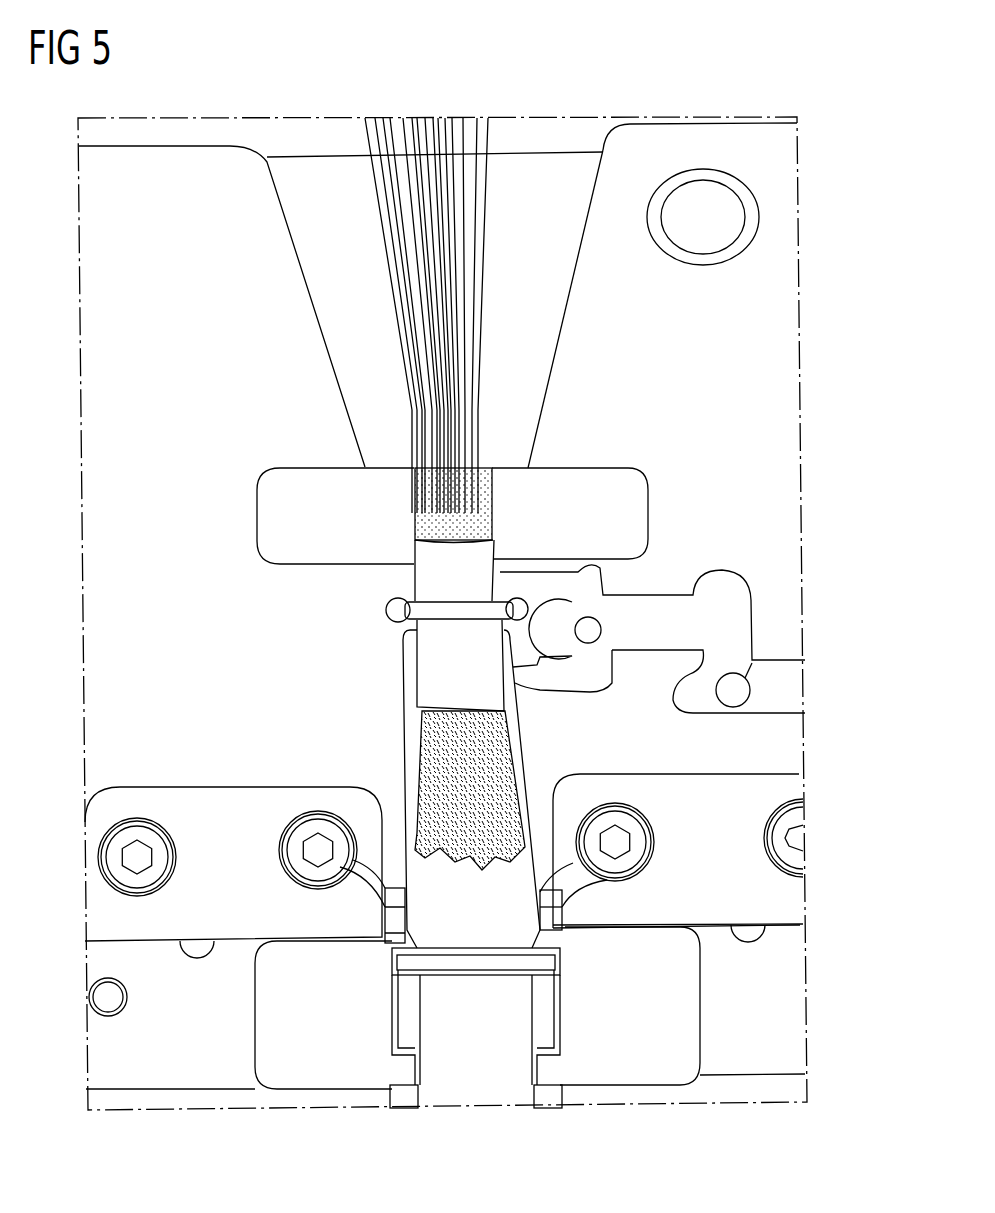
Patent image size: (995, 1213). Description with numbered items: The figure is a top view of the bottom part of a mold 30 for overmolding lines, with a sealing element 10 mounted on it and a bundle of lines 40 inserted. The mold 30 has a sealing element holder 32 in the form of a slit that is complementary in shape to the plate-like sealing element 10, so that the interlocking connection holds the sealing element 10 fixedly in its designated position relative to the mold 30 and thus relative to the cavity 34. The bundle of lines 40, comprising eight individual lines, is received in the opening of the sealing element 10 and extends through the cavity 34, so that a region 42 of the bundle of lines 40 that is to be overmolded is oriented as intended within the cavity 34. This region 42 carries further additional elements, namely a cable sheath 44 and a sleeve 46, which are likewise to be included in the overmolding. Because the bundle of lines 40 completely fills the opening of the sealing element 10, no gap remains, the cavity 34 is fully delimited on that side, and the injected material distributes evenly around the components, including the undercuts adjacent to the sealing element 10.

The sealing element 10 is at (390, 972).
The mold 30 is at (278, 613).
The sealing element holder 32 is at (560, 963).
The cavity 34 is at (530, 712).
The bundle of lines 40 is at (403, 1075).
The region of the bundle of lines to be overmolded 42 is at (377, 753).
The cable sheath 44 is at (430, 728).
The sleeve 46 is at (427, 665).